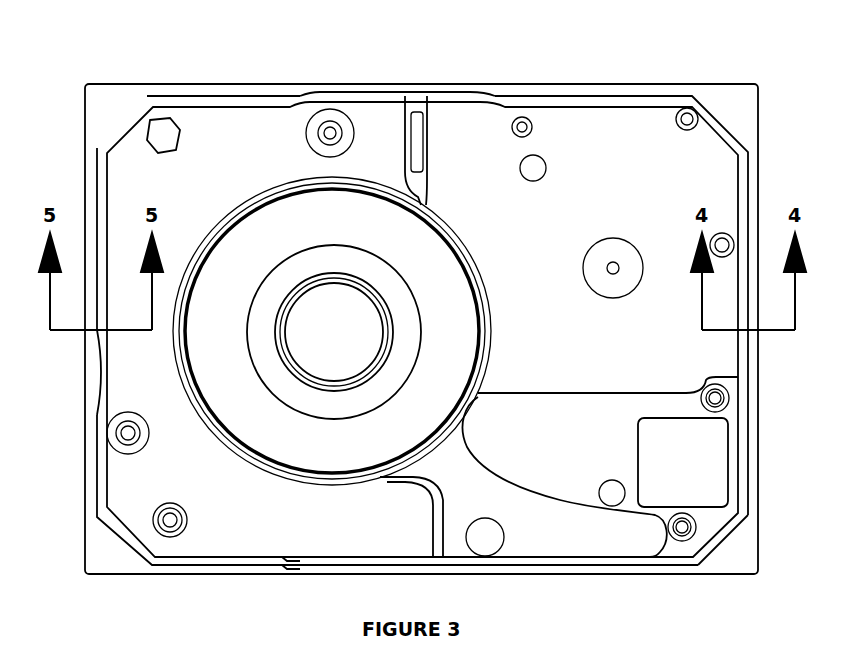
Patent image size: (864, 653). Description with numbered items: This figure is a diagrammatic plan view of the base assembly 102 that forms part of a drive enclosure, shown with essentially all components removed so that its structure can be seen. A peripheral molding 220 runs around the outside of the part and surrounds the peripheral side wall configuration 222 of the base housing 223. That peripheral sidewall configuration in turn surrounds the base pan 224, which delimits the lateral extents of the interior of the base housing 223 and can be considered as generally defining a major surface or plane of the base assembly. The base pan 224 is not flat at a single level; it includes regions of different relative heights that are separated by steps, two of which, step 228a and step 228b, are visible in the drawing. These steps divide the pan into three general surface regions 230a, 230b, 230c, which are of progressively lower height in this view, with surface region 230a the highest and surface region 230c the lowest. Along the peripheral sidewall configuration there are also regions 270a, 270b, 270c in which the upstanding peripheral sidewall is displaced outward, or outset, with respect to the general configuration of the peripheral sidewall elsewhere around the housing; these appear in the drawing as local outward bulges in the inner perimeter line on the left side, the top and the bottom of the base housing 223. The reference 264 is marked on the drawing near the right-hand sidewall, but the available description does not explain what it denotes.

The base assembly 102 is at (672, 82).
The peripheral molding 220 is at (234, 84).
The peripheral side wall configuration 222 is at (738, 355).
The base housing 223 is at (746, 530).
The base pan 224 is at (575, 344).
The step 228a is at (440, 506).
The step 228b is at (420, 197).
The surface region 230a is at (280, 524).
The surface region 230b is at (660, 194).
The surface region 230c is at (585, 480).
The cover rim 264 is at (752, 186).
The region of the peripheral sidewall configuration 270a is at (92, 352).
The region of the peripheral sidewall configuration 270b is at (346, 90).
The region of the peripheral sidewall configuration 270c is at (338, 578).